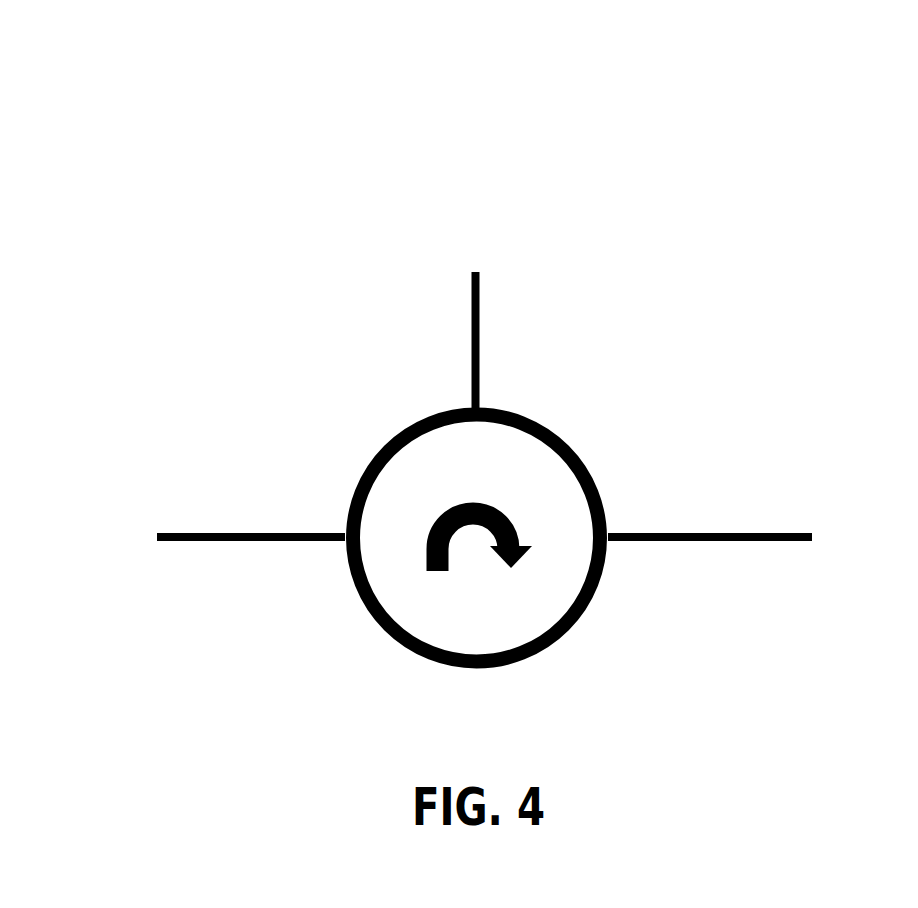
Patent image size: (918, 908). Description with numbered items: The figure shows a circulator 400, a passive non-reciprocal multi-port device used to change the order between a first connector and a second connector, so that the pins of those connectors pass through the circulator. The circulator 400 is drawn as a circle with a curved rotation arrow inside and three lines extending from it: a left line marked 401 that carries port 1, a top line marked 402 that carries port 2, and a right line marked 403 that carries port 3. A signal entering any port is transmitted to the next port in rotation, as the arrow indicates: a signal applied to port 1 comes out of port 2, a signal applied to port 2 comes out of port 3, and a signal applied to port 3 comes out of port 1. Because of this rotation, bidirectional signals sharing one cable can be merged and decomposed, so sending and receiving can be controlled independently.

The circulator 400 is at (110, 42).
The first port 401 is at (188, 531).
The second port 402 is at (471, 309).
The third port 403 is at (783, 532).
The port 1 is at (251, 518).
The port 2 is at (493, 340).
The port 3 is at (710, 520).